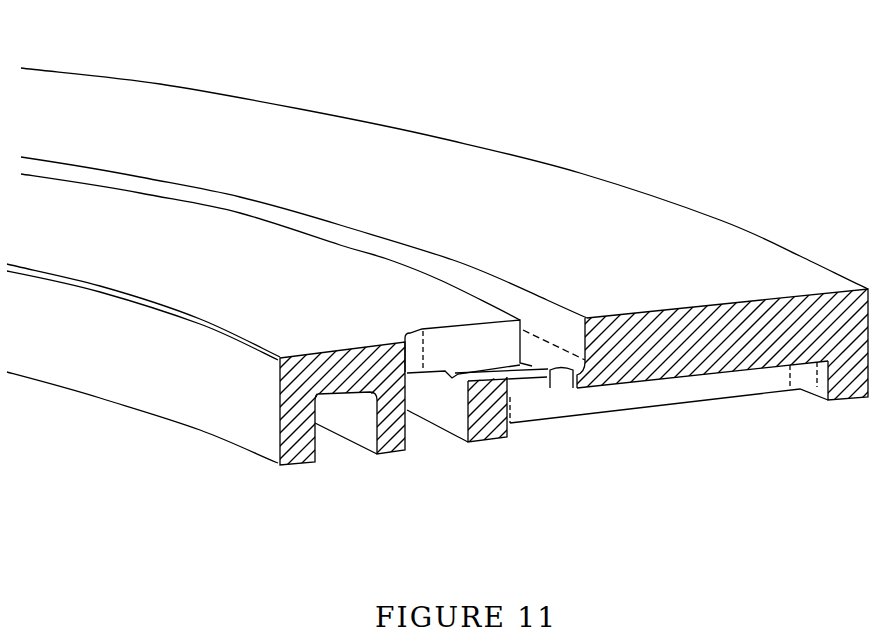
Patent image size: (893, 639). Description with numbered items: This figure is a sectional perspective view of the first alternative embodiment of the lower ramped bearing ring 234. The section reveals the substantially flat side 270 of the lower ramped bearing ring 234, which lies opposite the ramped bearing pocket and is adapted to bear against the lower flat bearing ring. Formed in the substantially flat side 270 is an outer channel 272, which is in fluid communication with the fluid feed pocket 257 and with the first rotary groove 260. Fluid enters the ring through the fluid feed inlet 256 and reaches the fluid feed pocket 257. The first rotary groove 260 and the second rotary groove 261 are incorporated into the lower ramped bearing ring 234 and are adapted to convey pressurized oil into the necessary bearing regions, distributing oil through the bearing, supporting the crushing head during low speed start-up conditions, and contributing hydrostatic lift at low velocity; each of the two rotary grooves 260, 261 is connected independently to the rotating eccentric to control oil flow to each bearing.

The lower ramped bearing ring 234 is at (527, 155).
The substantially flat side 270 is at (300, 152).
The outer channel 272 is at (178, 188).
The first rotary groove 260 is at (440, 440).
The second rotary groove 261 is at (338, 445).
The fluid feed inlet 256 is at (563, 378).
The fluid feed pocket 257 is at (770, 405).